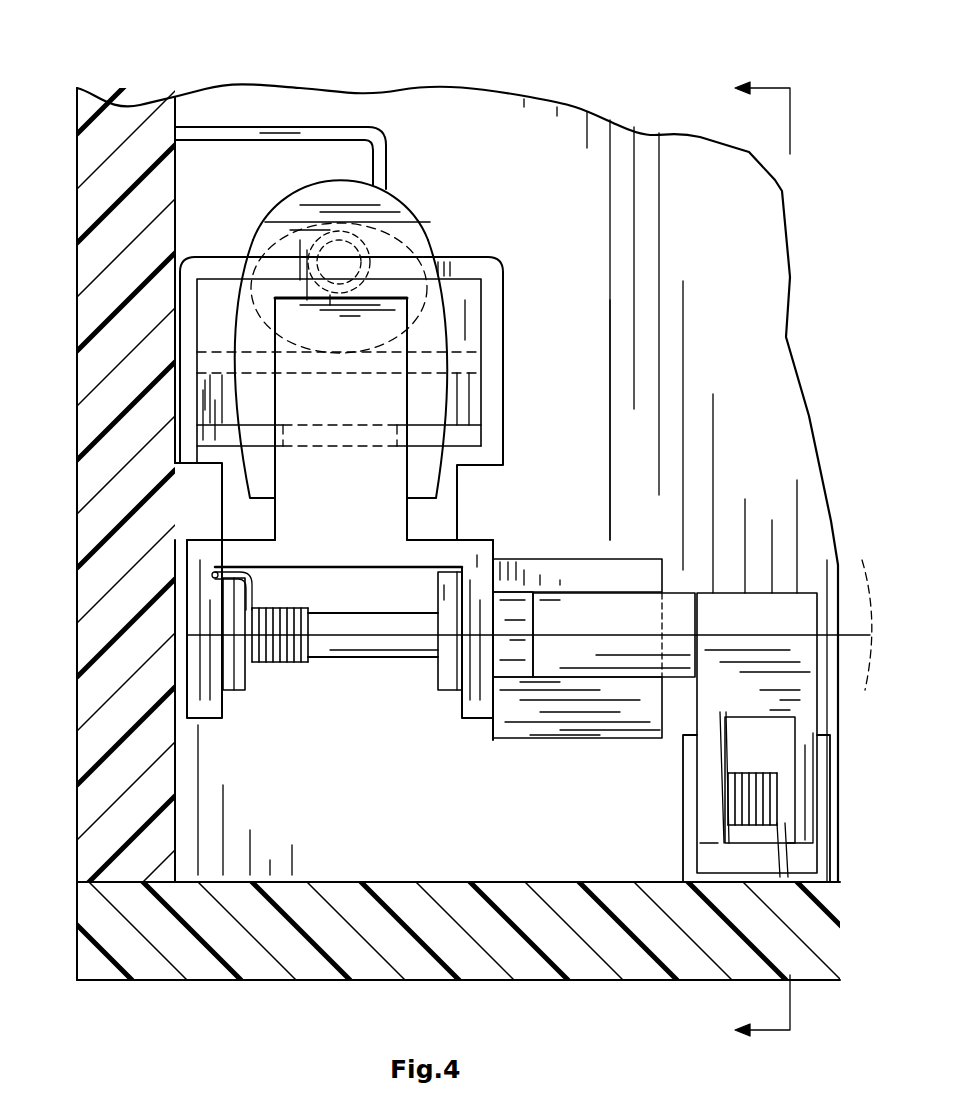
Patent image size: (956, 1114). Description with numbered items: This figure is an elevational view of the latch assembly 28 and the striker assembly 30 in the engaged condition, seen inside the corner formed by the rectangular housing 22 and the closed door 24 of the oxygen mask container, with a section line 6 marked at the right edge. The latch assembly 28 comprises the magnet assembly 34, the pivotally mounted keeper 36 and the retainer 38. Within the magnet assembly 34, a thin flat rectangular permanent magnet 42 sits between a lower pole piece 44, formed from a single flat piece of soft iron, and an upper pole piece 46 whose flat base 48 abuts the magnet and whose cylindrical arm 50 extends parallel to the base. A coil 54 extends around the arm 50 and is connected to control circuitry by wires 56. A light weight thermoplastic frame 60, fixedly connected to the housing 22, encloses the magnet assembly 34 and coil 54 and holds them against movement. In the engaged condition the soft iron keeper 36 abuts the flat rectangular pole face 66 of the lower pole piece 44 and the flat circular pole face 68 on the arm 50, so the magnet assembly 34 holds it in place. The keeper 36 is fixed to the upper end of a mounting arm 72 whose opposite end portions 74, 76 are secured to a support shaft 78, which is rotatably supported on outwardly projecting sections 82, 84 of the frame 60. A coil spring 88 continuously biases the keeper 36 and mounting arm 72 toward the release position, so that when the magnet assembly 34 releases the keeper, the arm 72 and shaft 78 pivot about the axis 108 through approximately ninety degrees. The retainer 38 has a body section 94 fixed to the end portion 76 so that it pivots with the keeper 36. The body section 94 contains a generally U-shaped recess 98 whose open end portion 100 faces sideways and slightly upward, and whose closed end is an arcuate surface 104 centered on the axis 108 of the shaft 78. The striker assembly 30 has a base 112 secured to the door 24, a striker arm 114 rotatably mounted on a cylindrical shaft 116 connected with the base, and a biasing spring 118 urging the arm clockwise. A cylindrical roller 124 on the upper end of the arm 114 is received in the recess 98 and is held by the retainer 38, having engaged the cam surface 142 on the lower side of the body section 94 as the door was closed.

The housing 22 is at (103, 166).
The door 24 is at (625, 976).
The latch assembly 28 is at (488, 150).
The striker assembly 30 is at (805, 578).
The magnet assembly 34 is at (513, 285).
The keeper 36 is at (241, 310).
The retainer 38 is at (597, 548).
The permanent magnet 42 is at (471, 400).
The lower pole piece 44 is at (477, 436).
The upper pole piece 46 is at (455, 343).
The base 48 is at (477, 366).
The arm 50 is at (372, 262).
The coil 54 is at (334, 193).
The wires 56 is at (283, 128).
The frame 60 is at (183, 413).
The pole face 66 is at (346, 417).
The pole face 68 is at (300, 262).
The mounting arm 72 is at (271, 523).
The end portion 74 is at (205, 667).
The end portion 76 is at (487, 718).
The support shaft 78 is at (377, 660).
The projecting section 82 is at (233, 692).
The projecting section 84 is at (447, 692).
The coil spring 88 is at (272, 662).
The body section 94 is at (641, 569).
The U-shaped recess 98 is at (513, 679).
The open end portion 100 is at (523, 558).
The arcuate surface 104 is at (520, 630).
The axis 108 is at (862, 560).
The base 112 is at (680, 840).
The striker arm 114 is at (770, 656).
The cylindrical shaft 116 is at (785, 795).
The biasing spring 118 is at (748, 773).
The roller 124 is at (681, 608).
The cam surface 142 is at (597, 712).
The section line 6 is at (747, 559).